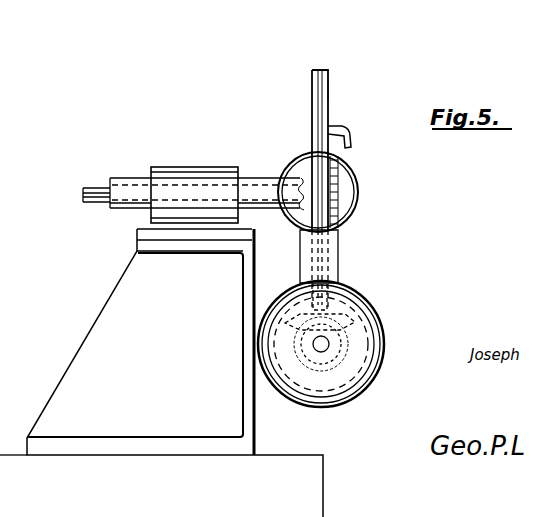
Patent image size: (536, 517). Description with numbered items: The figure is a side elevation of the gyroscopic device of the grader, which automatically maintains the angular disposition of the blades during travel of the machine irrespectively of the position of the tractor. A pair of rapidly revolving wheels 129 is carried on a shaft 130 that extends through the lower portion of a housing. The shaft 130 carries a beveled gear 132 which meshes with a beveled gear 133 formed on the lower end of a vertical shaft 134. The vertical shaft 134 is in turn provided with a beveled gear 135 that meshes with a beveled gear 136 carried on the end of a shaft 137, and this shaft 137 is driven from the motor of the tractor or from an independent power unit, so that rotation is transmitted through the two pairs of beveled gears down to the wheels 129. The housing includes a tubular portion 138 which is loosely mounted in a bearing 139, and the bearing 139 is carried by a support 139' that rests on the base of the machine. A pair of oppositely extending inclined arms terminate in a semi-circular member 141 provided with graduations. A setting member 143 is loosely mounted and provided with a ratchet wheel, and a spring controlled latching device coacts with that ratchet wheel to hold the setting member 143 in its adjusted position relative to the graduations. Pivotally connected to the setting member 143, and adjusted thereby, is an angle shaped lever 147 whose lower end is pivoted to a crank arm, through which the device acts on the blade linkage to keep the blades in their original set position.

The rapidly revolving wheels 129 is at (375, 315).
The shaft 130 is at (330, 344).
The beveled gear 132 is at (333, 358).
The beveled gear 133 is at (345, 325).
The vertical shaft 134 is at (327, 312).
The beveled gear 135 is at (300, 222).
The beveled gear 136 is at (305, 185).
The shaft 137 is at (97, 186).
The tubular portion 138 is at (248, 175).
The bearing 139 is at (192, 161).
The support 139' is at (161, 373).
The semi-circular member 141 is at (312, 72).
The setting member 143 is at (330, 92).
The angle shaped lever 147 is at (340, 128).